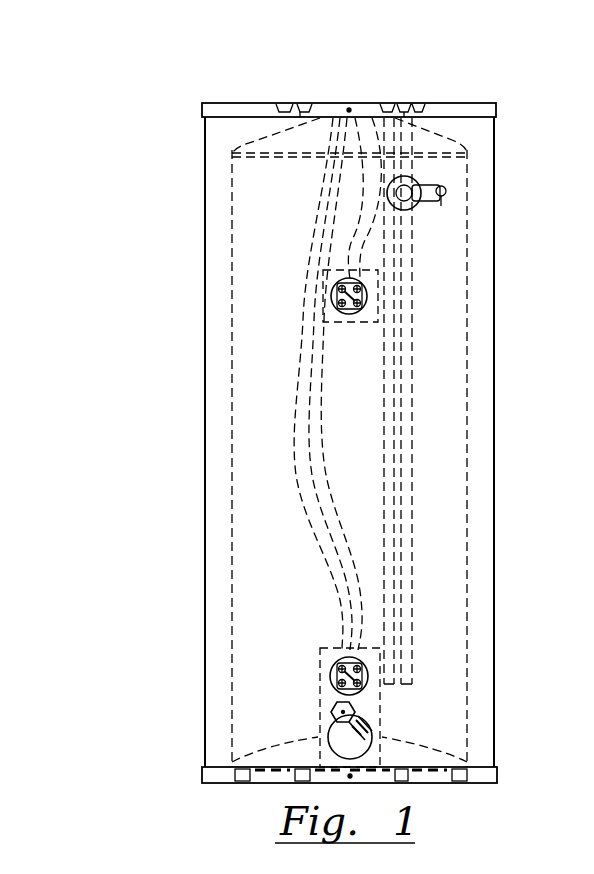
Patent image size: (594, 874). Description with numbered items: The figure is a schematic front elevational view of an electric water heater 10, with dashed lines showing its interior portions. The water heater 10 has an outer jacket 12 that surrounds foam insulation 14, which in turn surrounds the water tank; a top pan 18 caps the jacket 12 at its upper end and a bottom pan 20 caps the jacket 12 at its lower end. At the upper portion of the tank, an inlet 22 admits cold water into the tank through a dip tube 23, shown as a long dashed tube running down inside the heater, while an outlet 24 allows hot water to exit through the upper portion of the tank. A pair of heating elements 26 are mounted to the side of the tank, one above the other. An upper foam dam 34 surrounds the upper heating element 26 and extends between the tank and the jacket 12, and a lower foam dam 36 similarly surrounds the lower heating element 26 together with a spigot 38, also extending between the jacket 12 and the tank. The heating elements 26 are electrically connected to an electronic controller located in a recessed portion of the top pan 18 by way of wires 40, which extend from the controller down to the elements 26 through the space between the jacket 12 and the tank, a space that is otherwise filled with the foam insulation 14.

The electric water heater 10 is at (150, 362).
The outer jacket 12 is at (205, 562).
The foam insulation 14 is at (232, 530).
The top pan 18 is at (227, 103).
The bottom pan 20 is at (222, 784).
The inlet 22 is at (412, 118).
The dip tube 23 is at (397, 326).
The outlet 24 is at (288, 103).
The heating element 26 is at (330, 292).
The upper foam dam 34 is at (335, 268).
The lower foam dam 36 is at (320, 648).
The spigot 38 is at (398, 782).
The wires 40 is at (358, 217).